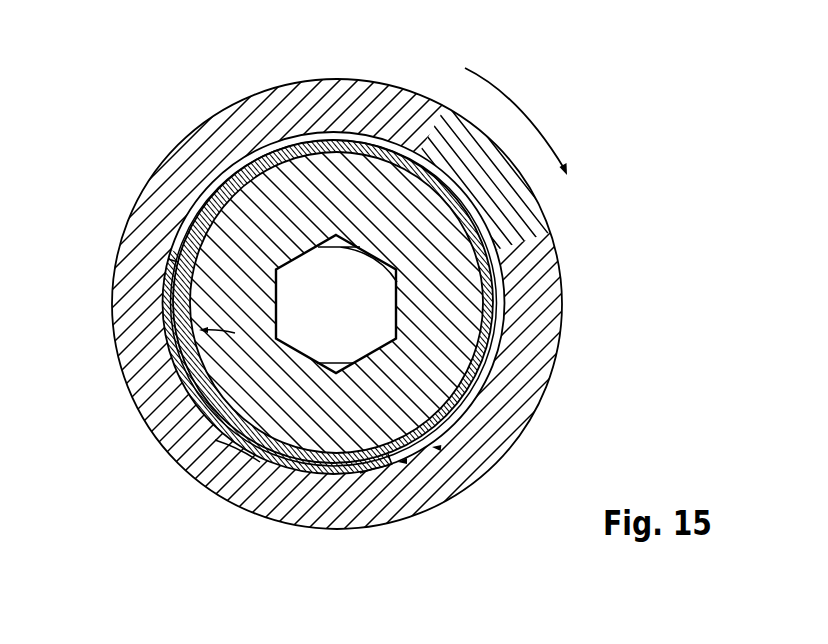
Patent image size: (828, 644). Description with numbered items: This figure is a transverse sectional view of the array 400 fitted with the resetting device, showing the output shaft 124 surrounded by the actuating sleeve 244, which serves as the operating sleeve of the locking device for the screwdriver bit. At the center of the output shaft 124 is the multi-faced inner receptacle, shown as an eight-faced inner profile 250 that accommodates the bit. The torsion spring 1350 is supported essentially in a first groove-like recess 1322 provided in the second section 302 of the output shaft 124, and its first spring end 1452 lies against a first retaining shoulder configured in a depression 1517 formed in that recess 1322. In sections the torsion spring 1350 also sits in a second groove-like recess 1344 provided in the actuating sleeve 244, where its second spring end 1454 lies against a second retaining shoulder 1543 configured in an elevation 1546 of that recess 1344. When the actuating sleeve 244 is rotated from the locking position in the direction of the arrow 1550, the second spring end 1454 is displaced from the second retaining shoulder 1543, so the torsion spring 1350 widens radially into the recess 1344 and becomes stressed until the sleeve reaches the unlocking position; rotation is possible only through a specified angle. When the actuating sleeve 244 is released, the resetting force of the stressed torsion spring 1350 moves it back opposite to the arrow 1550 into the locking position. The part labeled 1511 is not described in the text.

The array 400 is at (130, 105).
The actuating sleeve 244 is at (152, 189).
The output shaft 124 is at (490, 383).
The second groove-like recess 1344 is at (470, 217).
The clamp ring 1511 is at (183, 257).
The first groove-like recess 1322 is at (486, 306).
The first spring end 1452 is at (188, 312).
The depression 1517 is at (203, 349).
The second section 302 is at (452, 350).
The eight-faced inner profile 250 is at (397, 282).
The arrow 1550 is at (543, 95).
The elevation 1546 is at (440, 448).
The second retaining shoulder 1543 is at (408, 461).
The second spring end 1454 is at (386, 470).
The torsion spring 1350 is at (235, 447).